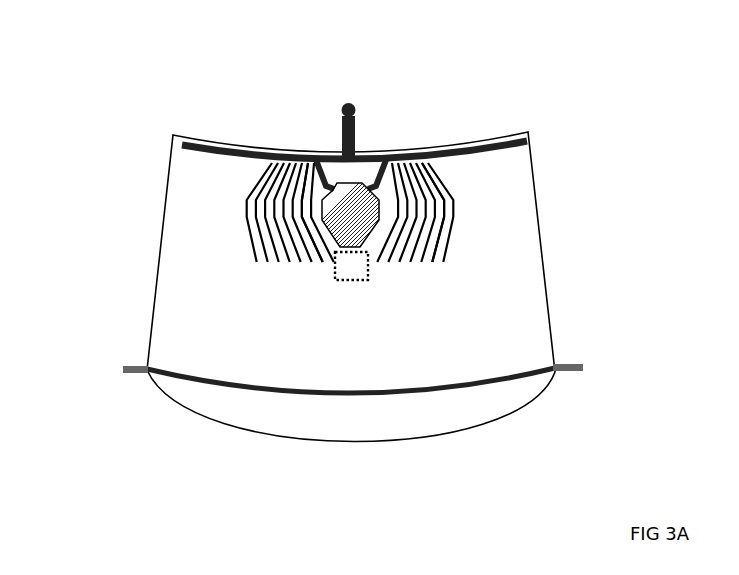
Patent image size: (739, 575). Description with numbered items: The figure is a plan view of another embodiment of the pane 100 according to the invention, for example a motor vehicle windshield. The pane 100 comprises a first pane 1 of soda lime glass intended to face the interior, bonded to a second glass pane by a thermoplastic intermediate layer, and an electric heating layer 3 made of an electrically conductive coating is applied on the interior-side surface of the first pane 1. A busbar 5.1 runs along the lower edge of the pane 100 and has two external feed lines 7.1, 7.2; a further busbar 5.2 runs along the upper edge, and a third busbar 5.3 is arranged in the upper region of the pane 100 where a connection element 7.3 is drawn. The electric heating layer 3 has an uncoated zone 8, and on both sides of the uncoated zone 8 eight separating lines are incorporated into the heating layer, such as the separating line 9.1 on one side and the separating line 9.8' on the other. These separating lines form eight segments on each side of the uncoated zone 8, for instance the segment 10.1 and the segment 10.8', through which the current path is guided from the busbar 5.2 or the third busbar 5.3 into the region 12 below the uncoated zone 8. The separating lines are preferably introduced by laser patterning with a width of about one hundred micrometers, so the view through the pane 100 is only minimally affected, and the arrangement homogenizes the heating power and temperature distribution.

The pane 100 is at (338, 251).
The first pane 1 is at (160, 250).
The electric heating layer 3 is at (208, 279).
The busbar 5.1 is at (230, 385).
The busbar 5.2 is at (470, 150).
The third busbar 5.3 is at (387, 170).
The feed line 7.1 is at (127, 365).
The feed line 7.2 is at (567, 368).
The connection element with feed point 7.3 is at (353, 118).
The uncoated zone 8 is at (345, 208).
The separating line 9.1 is at (308, 202).
The segment 10.1 is at (322, 208).
The separating line 9.8' is at (514, 202).
The segment 10.8' is at (510, 212).
The region 12 is at (333, 272).